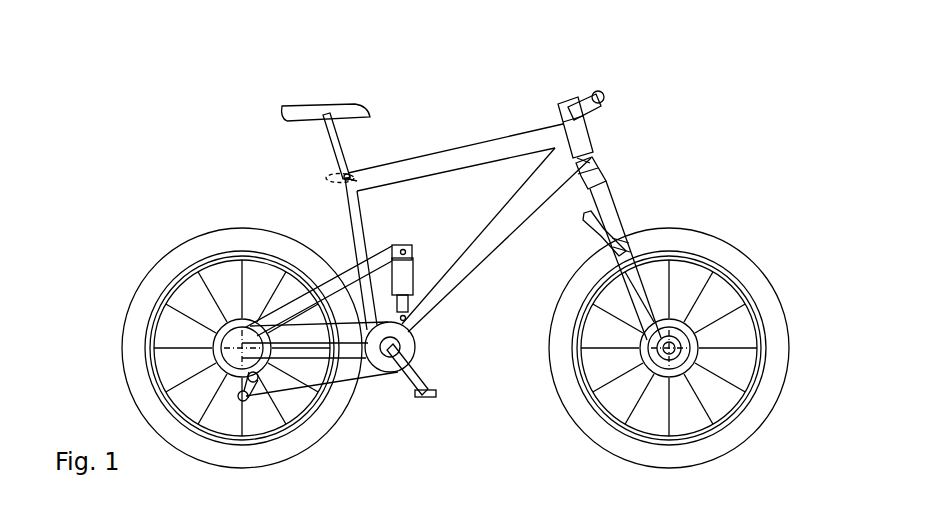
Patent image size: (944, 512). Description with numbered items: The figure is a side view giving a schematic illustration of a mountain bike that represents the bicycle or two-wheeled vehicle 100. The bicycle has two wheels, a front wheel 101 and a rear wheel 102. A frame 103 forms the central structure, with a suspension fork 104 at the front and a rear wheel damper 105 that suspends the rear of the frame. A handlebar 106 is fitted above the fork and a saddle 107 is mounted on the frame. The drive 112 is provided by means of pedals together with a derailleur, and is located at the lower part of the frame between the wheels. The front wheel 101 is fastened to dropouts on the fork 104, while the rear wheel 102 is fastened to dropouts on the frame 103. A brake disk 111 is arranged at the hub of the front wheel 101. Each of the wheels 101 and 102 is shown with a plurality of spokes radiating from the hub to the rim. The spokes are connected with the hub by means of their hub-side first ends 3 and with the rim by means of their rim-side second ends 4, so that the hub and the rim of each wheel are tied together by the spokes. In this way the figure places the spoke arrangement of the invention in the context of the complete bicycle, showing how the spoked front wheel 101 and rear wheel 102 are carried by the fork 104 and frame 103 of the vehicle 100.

The two-wheeled vehicle 100 is at (197, 132).
The front wheel 101 is at (745, 230).
The rear wheel 102 is at (172, 237).
The frame 103 is at (482, 153).
The suspension fork 104 is at (630, 231).
The rear wheel damper 105 is at (406, 267).
The handlebar 106 is at (602, 90).
The saddle 107 is at (332, 103).
The brake disk 111 is at (748, 358).
The drive 112 is at (415, 412).
The hub-side first end 3 is at (628, 417).
The rim-side second end 4 is at (669, 374).